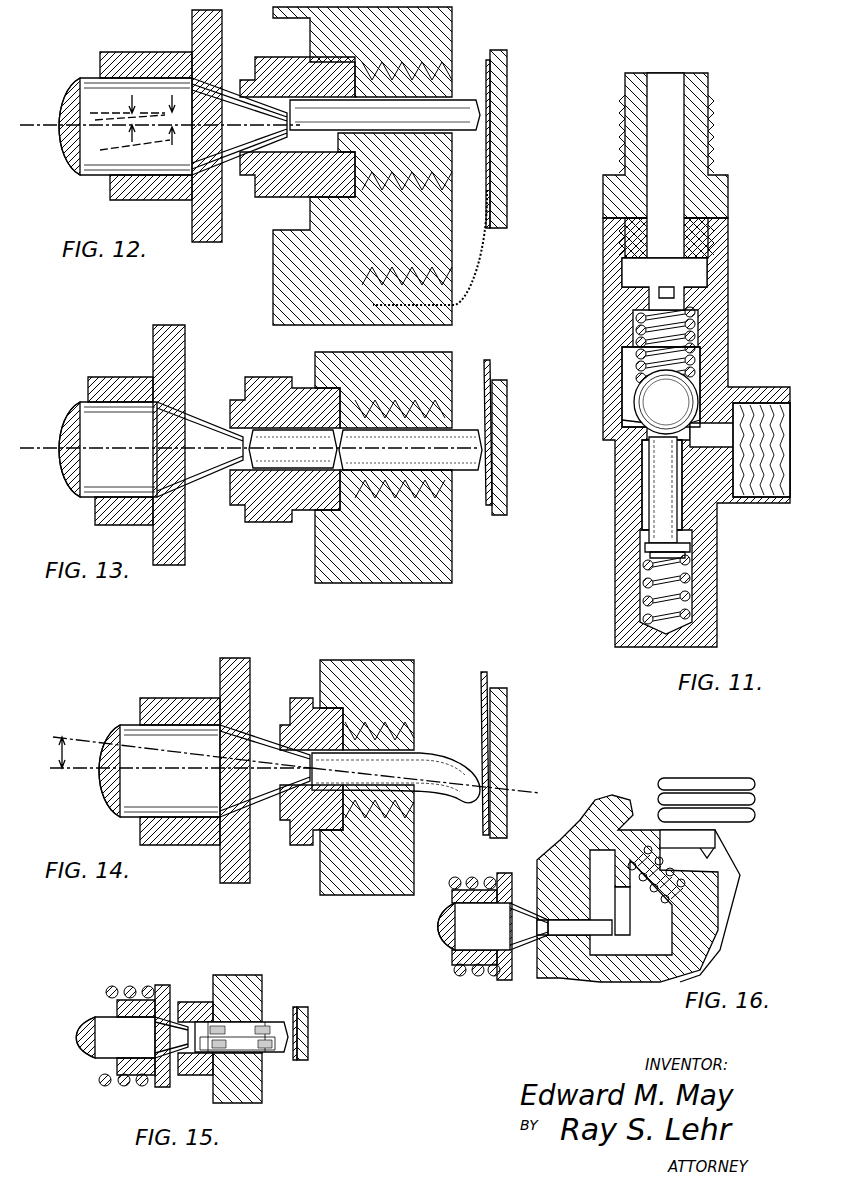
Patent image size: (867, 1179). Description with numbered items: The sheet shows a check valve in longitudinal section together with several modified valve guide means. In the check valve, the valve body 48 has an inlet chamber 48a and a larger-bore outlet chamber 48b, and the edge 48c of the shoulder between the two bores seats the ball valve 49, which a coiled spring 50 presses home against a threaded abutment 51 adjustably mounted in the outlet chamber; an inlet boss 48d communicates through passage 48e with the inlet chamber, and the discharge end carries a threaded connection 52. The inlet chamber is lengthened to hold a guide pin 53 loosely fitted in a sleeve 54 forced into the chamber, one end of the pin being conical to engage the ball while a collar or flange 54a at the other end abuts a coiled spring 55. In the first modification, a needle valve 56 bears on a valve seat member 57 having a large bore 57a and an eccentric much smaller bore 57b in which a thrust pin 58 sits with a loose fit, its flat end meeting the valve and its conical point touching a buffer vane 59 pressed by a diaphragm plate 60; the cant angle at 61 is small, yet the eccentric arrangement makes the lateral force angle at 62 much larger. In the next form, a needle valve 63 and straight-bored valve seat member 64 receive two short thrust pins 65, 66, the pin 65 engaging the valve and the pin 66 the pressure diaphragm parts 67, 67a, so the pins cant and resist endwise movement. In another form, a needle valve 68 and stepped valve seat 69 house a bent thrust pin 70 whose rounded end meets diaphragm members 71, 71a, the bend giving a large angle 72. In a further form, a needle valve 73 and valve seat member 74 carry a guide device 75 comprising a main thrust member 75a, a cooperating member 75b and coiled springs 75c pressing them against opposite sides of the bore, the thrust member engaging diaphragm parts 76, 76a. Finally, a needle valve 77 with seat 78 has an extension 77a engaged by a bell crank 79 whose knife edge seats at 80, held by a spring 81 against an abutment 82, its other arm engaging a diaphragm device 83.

In FIG. 11, the valve body 48 is at (730, 258).
In FIG. 11, the inlet chamber 48a is at (643, 450).
In FIG. 11, the outlet chamber 48b is at (628, 380).
In FIG. 11, the shoulder edge 48c is at (634, 425).
In FIG. 11, the inlet boss 48d is at (765, 390).
In FIG. 11, the passage 48e is at (728, 480).
In FIG. 11, the ball valve 49 is at (650, 404).
In FIG. 11, the coiled spring 50 is at (697, 352).
In FIG. 11, the threaded abutment 51 is at (707, 305).
In FIG. 11, the threaded connection 52 is at (722, 178).
In FIG. 11, the guide pin 53 is at (660, 500).
In FIG. 11, the sleeve 54 is at (645, 545).
In FIG. 11, the collar or flange 54a is at (650, 556).
In FIG. 11, the coiled spring 55 is at (700, 590).
In FIG. 12, the needle valve 56 is at (88, 172).
In FIG. 12, the valve seat member 57 is at (265, 197).
In FIG. 12, the large bore 57a is at (255, 58).
In FIG. 12, the smaller bore 57b is at (445, 165).
In FIG. 12, the thrust pin 58 is at (462, 100).
In FIG. 12, the buffer vane 59 is at (488, 62).
In FIG. 12, the diaphragm plate 60 is at (508, 184).
In FIG. 12, the cant angle 61 is at (165, 118).
In FIG. 12, the resultant force angle 62 is at (128, 117).
In FIG. 13, the needle valve 63 is at (90, 408).
In FIG. 13, the valve seat member 64 is at (270, 522).
In FIG. 13, the thrust pin 65 is at (288, 430).
In FIG. 13, the thrust pin 66 is at (472, 470).
In FIG. 13, the pressure diaphragm part 67 is at (512, 515).
In FIG. 13, the pressure diaphragm part 67a is at (490, 372).
In FIG. 14, the needle valve 68 is at (128, 812).
In FIG. 14, the valve seat 69 is at (303, 845).
In FIG. 14, the thrust pin 70 is at (450, 755).
In FIG. 14, the diaphragm member 71 is at (508, 732).
In FIG. 14, the diaphragm member 71a is at (487, 680).
In FIG. 14, the angle 72 is at (62, 737).
In FIG. 15, the needle valve 73 is at (90, 1058).
In FIG. 15, the valve seat member 74 is at (200, 1075).
In FIG. 15, the guide device 75 is at (270, 1022).
In FIG. 15, the main thrust member 75a is at (282, 1022).
In FIG. 15, the cooperating member 75b is at (275, 1052).
In FIG. 15, the sleeve slots 75c is at (215, 1022).
In FIG. 15, the diaphragm part 76 is at (309, 1013).
In FIG. 15, the diaphragm part 76a is at (296, 1062).
In FIG. 16, the needle valve 77 is at (460, 950).
In FIG. 16, the valve extension 77a is at (574, 960).
In FIG. 16, the seat 78 is at (545, 935).
In FIG. 16, the bell crank 79 is at (630, 915).
In FIG. 16, the knife edge seat 80 is at (610, 820).
In FIG. 16, the spring 81 is at (675, 865).
In FIG. 16, the abutment 82 is at (705, 895).
In FIG. 16, the diaphragm device 83 is at (756, 812).